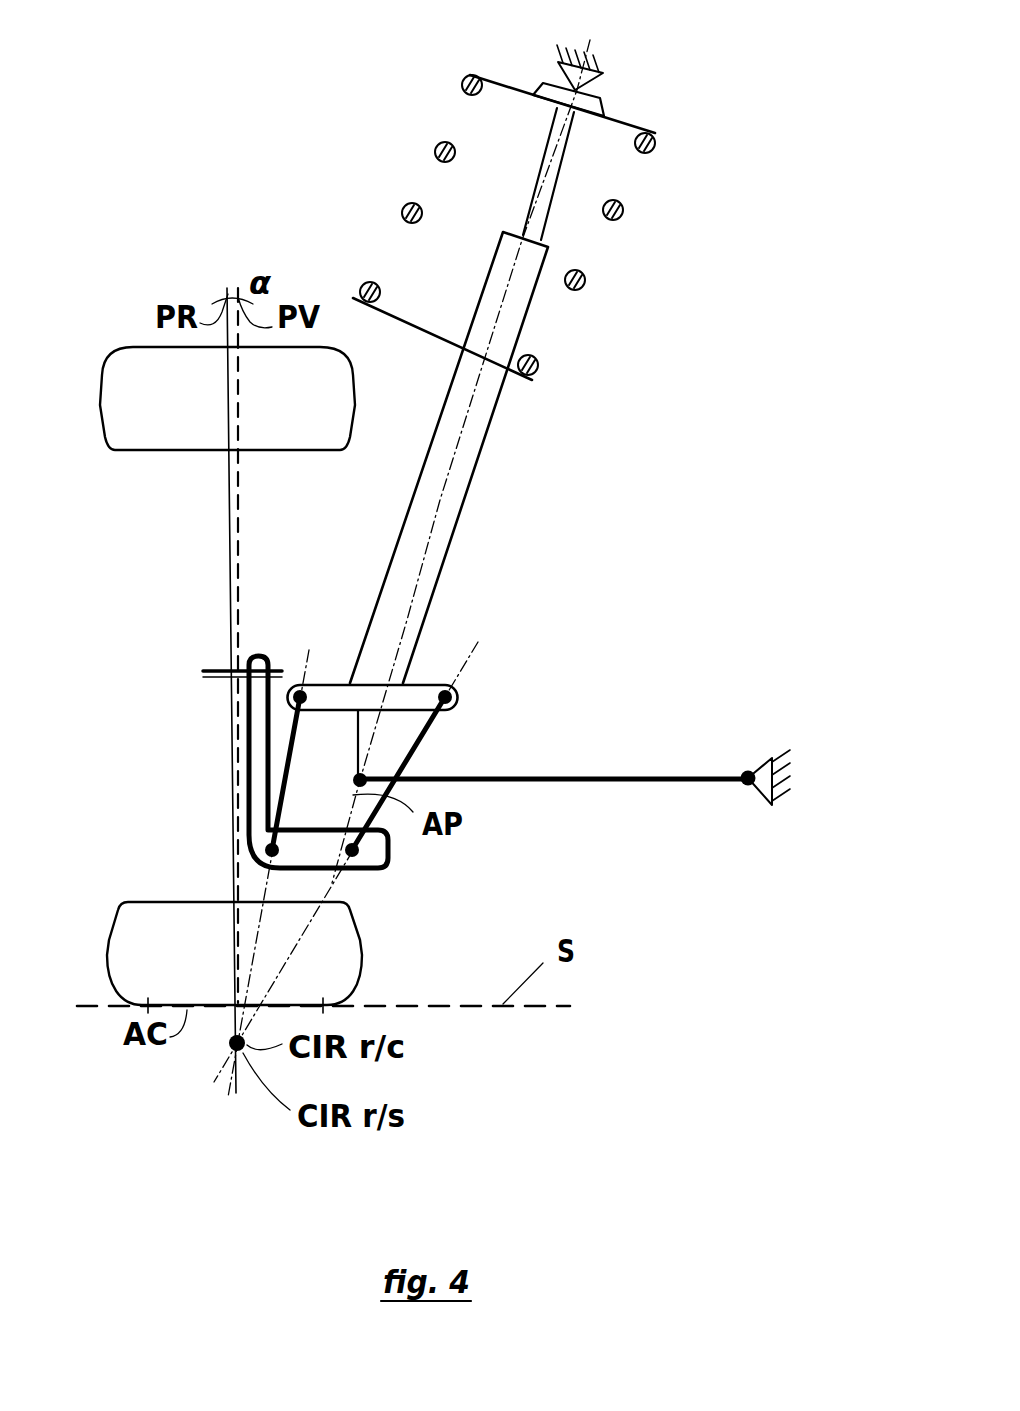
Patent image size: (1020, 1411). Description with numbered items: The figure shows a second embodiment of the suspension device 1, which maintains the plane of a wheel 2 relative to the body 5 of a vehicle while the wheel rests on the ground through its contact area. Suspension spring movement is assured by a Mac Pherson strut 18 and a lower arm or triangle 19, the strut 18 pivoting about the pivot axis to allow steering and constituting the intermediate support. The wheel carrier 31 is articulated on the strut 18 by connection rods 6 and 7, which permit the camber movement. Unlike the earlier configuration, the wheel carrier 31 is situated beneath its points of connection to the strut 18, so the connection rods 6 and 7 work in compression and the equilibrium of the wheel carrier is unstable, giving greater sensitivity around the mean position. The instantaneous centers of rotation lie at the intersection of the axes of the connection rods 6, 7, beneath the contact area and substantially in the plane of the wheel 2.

The suspension device 1 is at (735, 536).
The wheel 2 is at (232, 837).
The body 5 is at (580, 50).
The connection rod 6 is at (289, 771).
The connection rod 7 is at (417, 745).
The Mac Pherson strut 18 is at (455, 520).
The lower arm 19 is at (553, 777).
The wheel carrier 31 is at (390, 876).